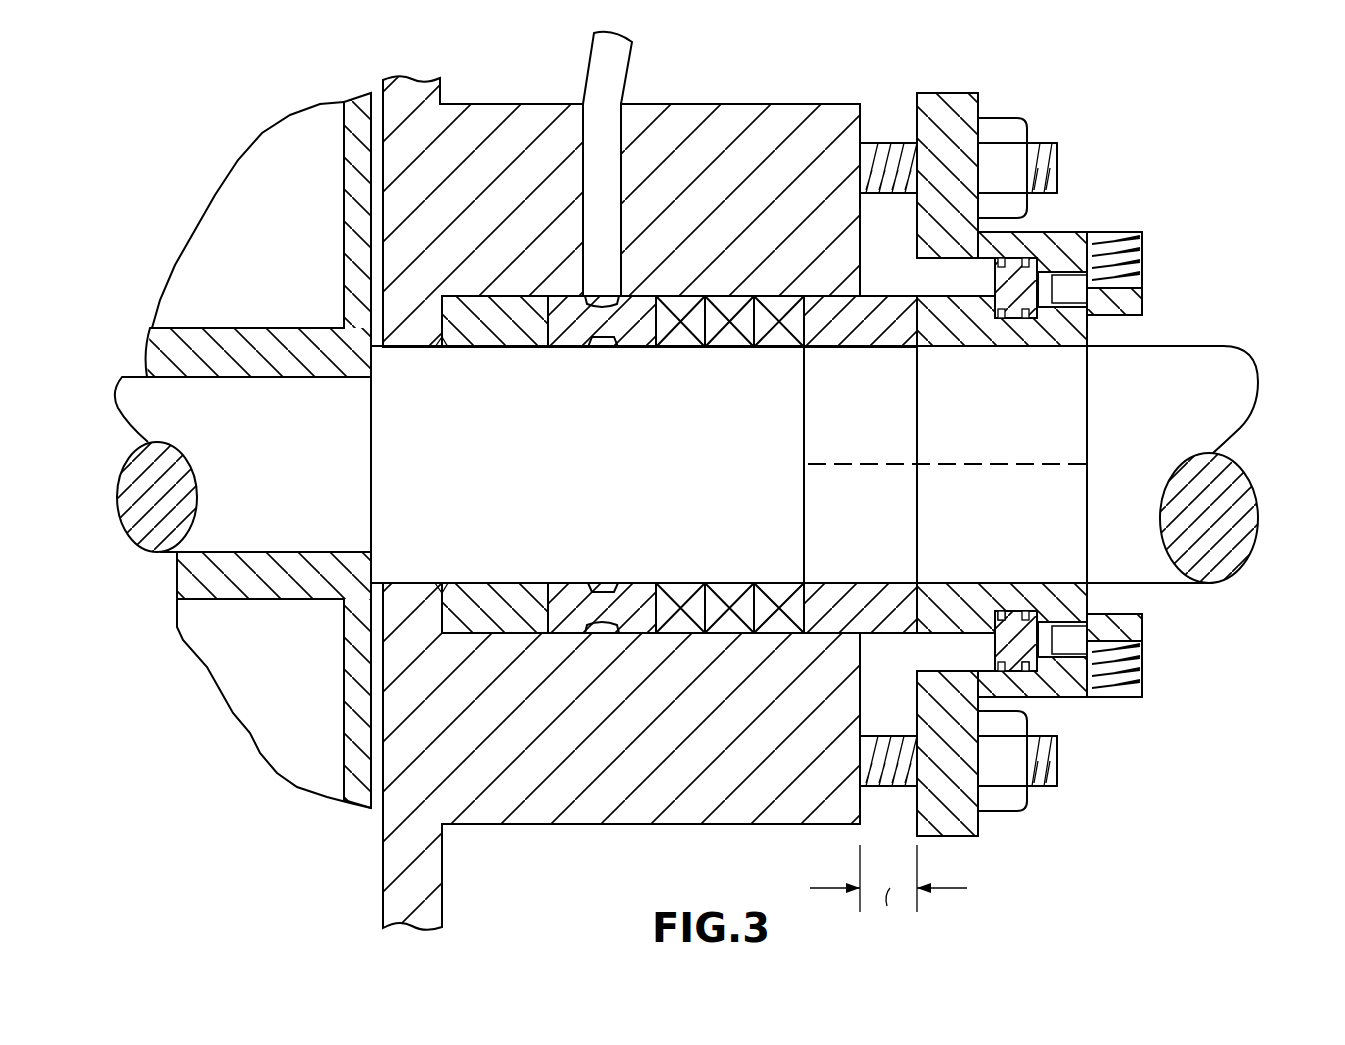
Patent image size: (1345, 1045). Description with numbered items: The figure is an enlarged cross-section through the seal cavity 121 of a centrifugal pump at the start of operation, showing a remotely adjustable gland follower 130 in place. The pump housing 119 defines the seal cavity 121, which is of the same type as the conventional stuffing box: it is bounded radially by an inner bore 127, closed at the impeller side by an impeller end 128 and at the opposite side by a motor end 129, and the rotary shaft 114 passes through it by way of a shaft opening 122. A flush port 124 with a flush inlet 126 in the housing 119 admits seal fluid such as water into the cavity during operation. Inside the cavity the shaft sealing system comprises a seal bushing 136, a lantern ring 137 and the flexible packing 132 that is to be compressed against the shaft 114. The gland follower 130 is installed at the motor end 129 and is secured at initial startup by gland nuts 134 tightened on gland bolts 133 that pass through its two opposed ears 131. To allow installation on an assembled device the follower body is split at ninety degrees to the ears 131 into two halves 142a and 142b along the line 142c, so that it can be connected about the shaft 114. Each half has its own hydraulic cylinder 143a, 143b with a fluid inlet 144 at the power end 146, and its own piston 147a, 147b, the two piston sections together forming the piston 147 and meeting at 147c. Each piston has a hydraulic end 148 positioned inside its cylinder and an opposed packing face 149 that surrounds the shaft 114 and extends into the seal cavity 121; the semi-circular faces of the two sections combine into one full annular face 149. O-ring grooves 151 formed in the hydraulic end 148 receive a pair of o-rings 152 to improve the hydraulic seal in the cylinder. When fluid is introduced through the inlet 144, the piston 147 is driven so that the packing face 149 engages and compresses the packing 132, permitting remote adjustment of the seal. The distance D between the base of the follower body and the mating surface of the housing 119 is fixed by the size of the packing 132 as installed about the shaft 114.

The shaft 114 is at (1243, 380).
The housing 119 is at (482, 130).
The seal cavity 121 is at (412, 472).
The bore 122 is at (403, 350).
The flush port outlet 124 is at (602, 290).
The flush channel 126 is at (597, 63).
The bushing inner surface 127 is at (500, 615).
The housing hub 128 is at (387, 532).
The motor end 129 is at (868, 277).
The remotely adjustable gland follower 130 is at (1097, 207).
The ears 131 is at (942, 108).
The packing 132 is at (778, 332).
The gland bolts 133 is at (1050, 167).
The gland nuts 134 is at (1012, 130).
The bushing 136 is at (467, 330).
The groove 137 is at (555, 347).
The body half 142a is at (1030, 540).
The body half 142b is at (1088, 392).
The split line 142c is at (1121, 464).
The lower seal element 143a is at (1027, 672).
The upper seal element 143b is at (1047, 297).
The fluid inlet 144 is at (1103, 690).
The power end 146 is at (1143, 677).
The piston 147 is at (775, 450).
The piston section 147a is at (850, 540).
The piston section 147b is at (850, 395).
The gap centerline 147c is at (850, 482).
The hydraulic end 148 is at (1043, 290).
The packing face 149 is at (778, 630).
The o-ring groove 151 is at (1027, 645).
The o-ring 152 is at (1027, 645).